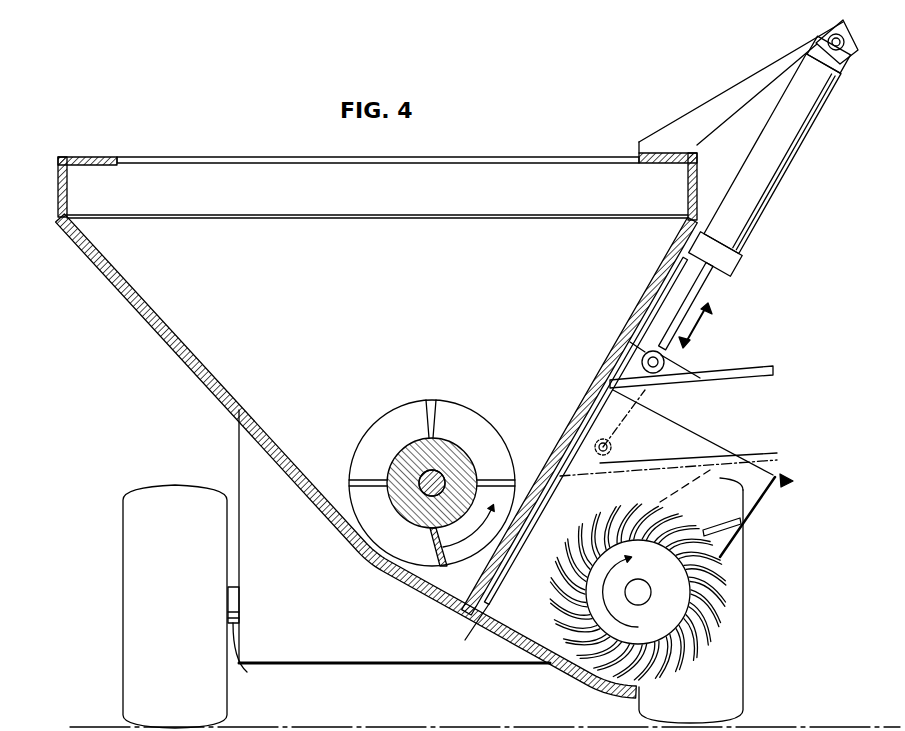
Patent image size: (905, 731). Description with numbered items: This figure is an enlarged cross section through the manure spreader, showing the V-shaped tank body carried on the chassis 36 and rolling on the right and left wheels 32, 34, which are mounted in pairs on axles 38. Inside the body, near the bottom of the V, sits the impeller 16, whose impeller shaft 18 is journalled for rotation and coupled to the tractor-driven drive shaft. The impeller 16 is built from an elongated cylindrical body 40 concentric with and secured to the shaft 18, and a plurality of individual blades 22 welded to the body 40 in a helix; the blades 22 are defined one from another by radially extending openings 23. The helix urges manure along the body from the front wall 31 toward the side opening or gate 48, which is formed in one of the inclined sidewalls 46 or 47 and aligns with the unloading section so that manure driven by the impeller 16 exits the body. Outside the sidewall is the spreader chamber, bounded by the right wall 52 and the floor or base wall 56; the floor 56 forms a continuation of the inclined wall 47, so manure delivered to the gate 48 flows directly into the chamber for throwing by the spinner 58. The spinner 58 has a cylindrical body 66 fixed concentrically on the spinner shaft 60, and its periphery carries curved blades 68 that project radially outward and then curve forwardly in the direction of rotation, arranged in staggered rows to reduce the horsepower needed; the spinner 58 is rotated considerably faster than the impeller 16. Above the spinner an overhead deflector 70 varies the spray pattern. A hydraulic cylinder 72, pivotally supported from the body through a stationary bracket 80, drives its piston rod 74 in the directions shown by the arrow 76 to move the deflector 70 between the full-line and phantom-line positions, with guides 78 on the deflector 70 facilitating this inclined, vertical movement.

The impeller 16 is at (485, 375).
The impeller shaft 18 is at (447, 473).
The blades 22 is at (360, 450).
The radially extending openings 23 is at (428, 402).
The front wall 31 is at (138, 263).
The right wheels 32 is at (740, 692).
The left wheels 34 is at (130, 672).
The chassis 36 is at (306, 664).
The axles 38 is at (233, 627).
The cylindrical body 40 is at (400, 457).
The inclined sidewall 46 is at (663, 250).
The inclined sidewall 47 is at (163, 330).
The side opening or gate 48 is at (560, 447).
The right wall 52 is at (740, 498).
The floor or base wall 56 is at (495, 627).
The spinner 58 is at (577, 672).
The spinner shaft 60 is at (651, 592).
The cylindrical body 66 is at (733, 618).
The curved blades 68 is at (747, 523).
The overhead deflector 70 is at (753, 363).
The hydraulic cylinder 72 is at (775, 172).
The piston rod 74 is at (697, 300).
The arrow 76 is at (700, 323).
The guides 78 is at (652, 292).
The stationary bracket 80 is at (728, 97).